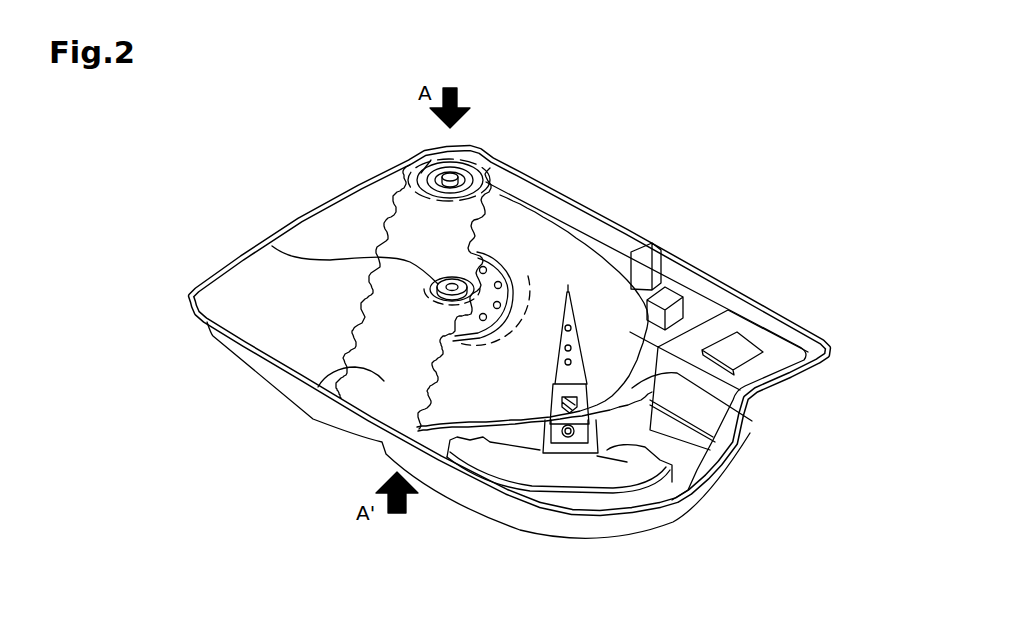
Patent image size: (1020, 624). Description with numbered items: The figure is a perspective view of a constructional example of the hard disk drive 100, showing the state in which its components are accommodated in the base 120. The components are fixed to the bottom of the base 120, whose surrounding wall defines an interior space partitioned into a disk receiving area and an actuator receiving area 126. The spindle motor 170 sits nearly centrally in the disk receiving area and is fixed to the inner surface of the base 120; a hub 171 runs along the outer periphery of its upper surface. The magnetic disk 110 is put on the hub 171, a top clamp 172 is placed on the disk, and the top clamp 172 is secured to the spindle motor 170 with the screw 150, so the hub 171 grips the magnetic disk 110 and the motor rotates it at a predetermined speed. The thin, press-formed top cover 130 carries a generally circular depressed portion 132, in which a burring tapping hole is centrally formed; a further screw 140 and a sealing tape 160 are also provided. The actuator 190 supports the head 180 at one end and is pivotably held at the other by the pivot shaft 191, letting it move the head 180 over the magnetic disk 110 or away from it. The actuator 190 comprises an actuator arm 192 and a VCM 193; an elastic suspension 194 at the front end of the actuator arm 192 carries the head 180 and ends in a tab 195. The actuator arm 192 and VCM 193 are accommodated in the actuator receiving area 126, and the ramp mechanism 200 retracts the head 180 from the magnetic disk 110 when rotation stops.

The hard disk drive 100 is at (519, 346).
The magnetic disk 110 is at (519, 313).
The base 120 is at (478, 437).
The actuator receiving area 126 is at (733, 430).
The top cover 130 is at (292, 401).
The depressed portion 132 is at (478, 167).
The screw 140 is at (425, 164).
The screw 150 is at (272, 246).
The sealing tape 160 is at (260, 291).
The spindle motor 170 is at (580, 367).
The hub 171 is at (533, 432).
The top clamp 172 is at (512, 298).
The head 180 is at (660, 285).
The actuator 190 is at (654, 464).
The pivot shaft 191 is at (568, 437).
The actuator arm 192 is at (713, 440).
The VCM (voice coil motor) 193 is at (655, 468).
The suspension 194 is at (600, 335).
The tab 195 is at (590, 312).
The ramp mechanism 200 is at (683, 312).